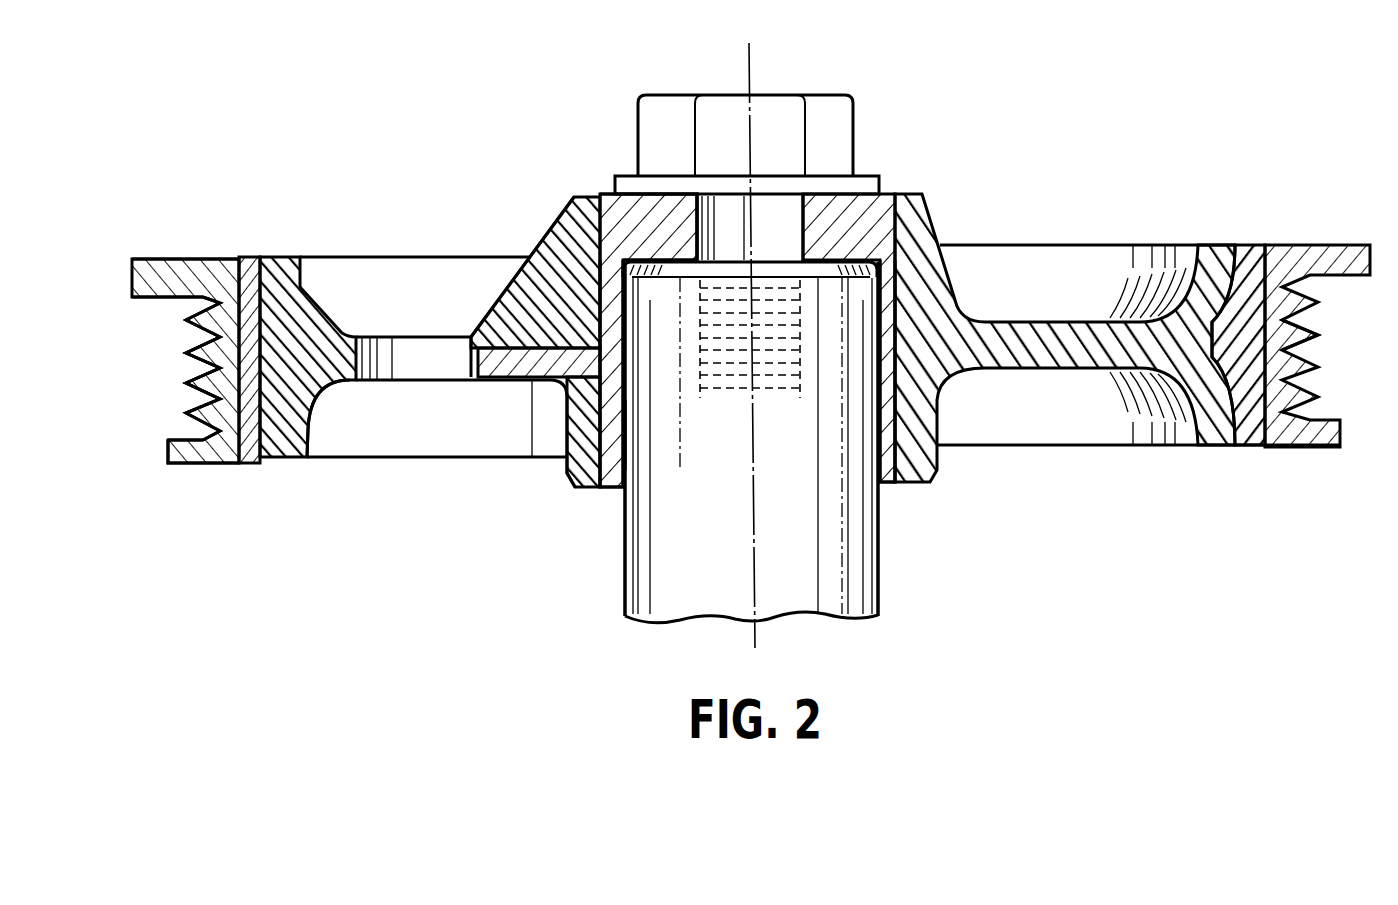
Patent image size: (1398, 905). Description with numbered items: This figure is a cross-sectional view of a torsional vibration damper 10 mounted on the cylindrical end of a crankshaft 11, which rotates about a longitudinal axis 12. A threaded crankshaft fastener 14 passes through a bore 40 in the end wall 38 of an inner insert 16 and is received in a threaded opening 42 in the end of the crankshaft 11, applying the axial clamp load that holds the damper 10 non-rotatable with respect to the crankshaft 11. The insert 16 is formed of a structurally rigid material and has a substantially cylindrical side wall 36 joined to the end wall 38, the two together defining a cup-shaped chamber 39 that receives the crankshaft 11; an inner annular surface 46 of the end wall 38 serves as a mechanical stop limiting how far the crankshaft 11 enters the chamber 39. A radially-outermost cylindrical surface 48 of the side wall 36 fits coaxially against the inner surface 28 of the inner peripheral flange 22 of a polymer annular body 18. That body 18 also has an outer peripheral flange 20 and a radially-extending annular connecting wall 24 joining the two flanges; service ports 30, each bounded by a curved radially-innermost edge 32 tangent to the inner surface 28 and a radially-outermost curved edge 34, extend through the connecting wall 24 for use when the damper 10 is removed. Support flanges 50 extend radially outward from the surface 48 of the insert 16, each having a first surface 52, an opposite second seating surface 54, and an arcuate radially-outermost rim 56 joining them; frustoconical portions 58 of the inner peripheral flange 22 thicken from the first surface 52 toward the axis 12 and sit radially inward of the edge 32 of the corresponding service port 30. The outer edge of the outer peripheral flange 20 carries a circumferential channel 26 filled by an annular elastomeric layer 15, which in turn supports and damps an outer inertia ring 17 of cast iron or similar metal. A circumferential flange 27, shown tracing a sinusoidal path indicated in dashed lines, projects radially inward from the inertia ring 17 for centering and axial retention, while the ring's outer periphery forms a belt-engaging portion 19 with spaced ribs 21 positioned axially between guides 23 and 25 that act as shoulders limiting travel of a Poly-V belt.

The torsional vibration damper 10 is at (1093, 155).
The crankshaft 11 is at (791, 440).
The longitudinal axis 12 is at (750, 58).
The threaded crankshaft fastener 14 is at (856, 119).
The annular elastomeric layer 15 is at (252, 465).
The inner insert 16 is at (887, 188).
The outer inertia ring 17 is at (154, 362).
The annular body 18 is at (1098, 370).
The belt-engaging portion 19 is at (186, 403).
The outer peripheral flange 20 is at (284, 282).
The ribs 21 is at (186, 383).
The inner peripheral flange 22 is at (920, 227).
The guide 23 is at (152, 272).
The annular connecting wall 24 is at (1055, 320).
The guide 25 is at (173, 465).
The circumferential channel 26 is at (313, 452).
The circumferential flange 27 is at (245, 342).
The inner surface 28 is at (629, 440).
The service ports 30 is at (392, 383).
The radially-innermost edge 32 is at (470, 345).
The radially-outermost curved edge 34 is at (372, 340).
The side wall 36 is at (598, 482).
The end wall 38 is at (740, 329).
The cup-shaped chamber 39 is at (888, 482).
The bore 40 is at (722, 218).
The threaded opening 42 is at (774, 395).
The inner annular surface 46 is at (865, 283).
The radially-outermost cylindrical surface 48 is at (607, 225).
The support flanges 50 is at (513, 398).
The first surface 52 is at (518, 272).
The second seating surface 54 is at (533, 445).
The arcuate radially-outermost rim 56 is at (472, 378).
The frustoconical portions 58 is at (507, 278).